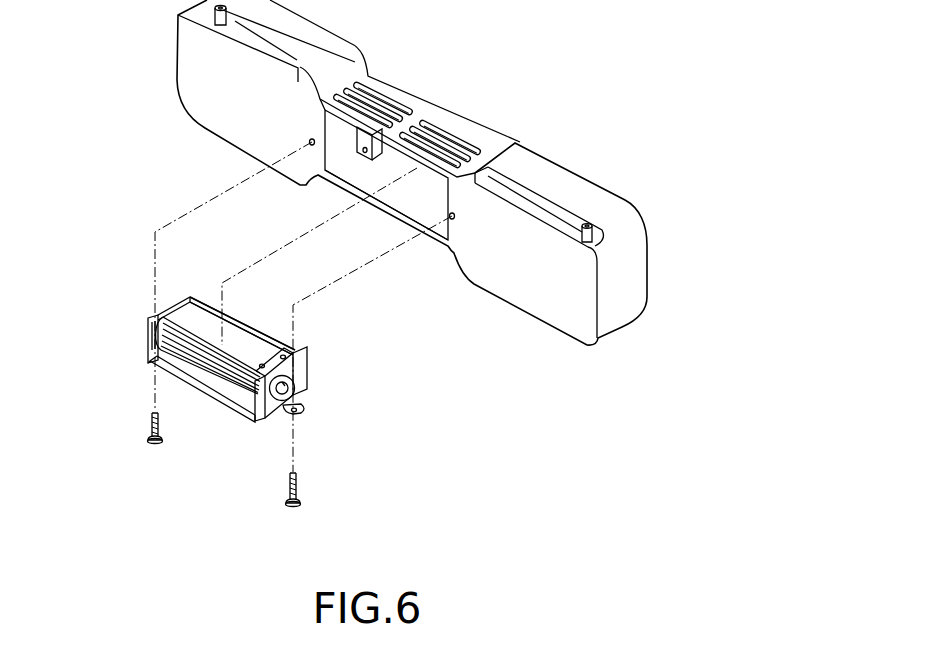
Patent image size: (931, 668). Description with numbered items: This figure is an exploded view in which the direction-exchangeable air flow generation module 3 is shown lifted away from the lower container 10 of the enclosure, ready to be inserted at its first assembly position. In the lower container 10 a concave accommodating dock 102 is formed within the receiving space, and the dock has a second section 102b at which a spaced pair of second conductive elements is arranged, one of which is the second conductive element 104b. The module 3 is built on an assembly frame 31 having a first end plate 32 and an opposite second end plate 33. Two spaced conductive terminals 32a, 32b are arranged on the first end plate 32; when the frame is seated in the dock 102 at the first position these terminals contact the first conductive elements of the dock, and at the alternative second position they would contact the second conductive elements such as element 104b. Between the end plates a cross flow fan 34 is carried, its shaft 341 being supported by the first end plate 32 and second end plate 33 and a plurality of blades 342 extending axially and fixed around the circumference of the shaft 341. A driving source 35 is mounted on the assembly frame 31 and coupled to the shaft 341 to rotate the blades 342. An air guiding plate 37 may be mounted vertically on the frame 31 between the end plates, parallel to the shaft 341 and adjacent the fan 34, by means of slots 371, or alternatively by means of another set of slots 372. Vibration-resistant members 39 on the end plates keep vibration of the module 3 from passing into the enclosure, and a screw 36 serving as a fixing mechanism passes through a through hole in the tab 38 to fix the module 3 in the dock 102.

The lower container 10 is at (557, 318).
The concave accommodating dock 102 is at (423, 203).
The second section 102b is at (368, 140).
The second conductive element 104b is at (365, 153).
The direction-exchangeable air flow generation module 3 is at (137, 381).
The assembly frame 31 is at (206, 376).
The first end plate 32 is at (296, 351).
The conductive terminal 32a is at (284, 354).
The conductive terminal 32b is at (262, 363).
The second end plate 33 is at (187, 313).
The cross flow fan 34 is at (191, 368).
The shaft 341 is at (295, 388).
The blades 342 is at (237, 378).
The driving source 35 is at (152, 318).
The screw 36 is at (149, 433).
The air guiding plate 37 is at (212, 315).
The slots 371 is at (198, 312).
The slots 372 is at (150, 342).
The tab 38 is at (305, 409).
The vibration-resistant member 39 is at (308, 362).